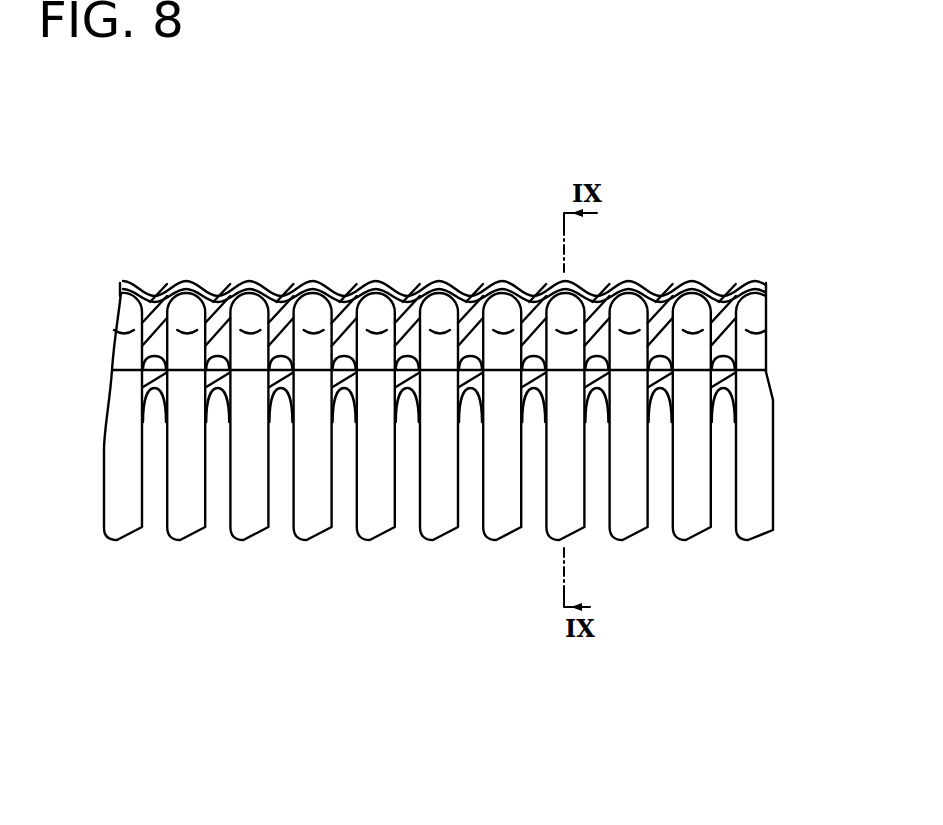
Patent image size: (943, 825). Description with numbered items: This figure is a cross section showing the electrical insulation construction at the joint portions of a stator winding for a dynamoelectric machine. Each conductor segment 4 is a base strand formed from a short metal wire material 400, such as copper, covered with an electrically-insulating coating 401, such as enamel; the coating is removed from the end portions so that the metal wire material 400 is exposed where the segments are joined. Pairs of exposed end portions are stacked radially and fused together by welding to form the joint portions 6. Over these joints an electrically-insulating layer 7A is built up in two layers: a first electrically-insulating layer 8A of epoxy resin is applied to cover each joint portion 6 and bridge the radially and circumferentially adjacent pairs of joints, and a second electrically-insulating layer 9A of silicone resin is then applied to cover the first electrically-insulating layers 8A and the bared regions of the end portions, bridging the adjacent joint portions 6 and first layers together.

The conductor segment 4 is at (773, 465).
The metal wire material 400 is at (757, 355).
The electrically-insulating coating 401 is at (765, 416).
The joint portion 6 is at (313, 308).
The electrically-insulating layer 7A is at (422, 181).
The first electrically-insulating layer 8A is at (348, 300).
The second electrically-insulating layer 9A is at (372, 290).